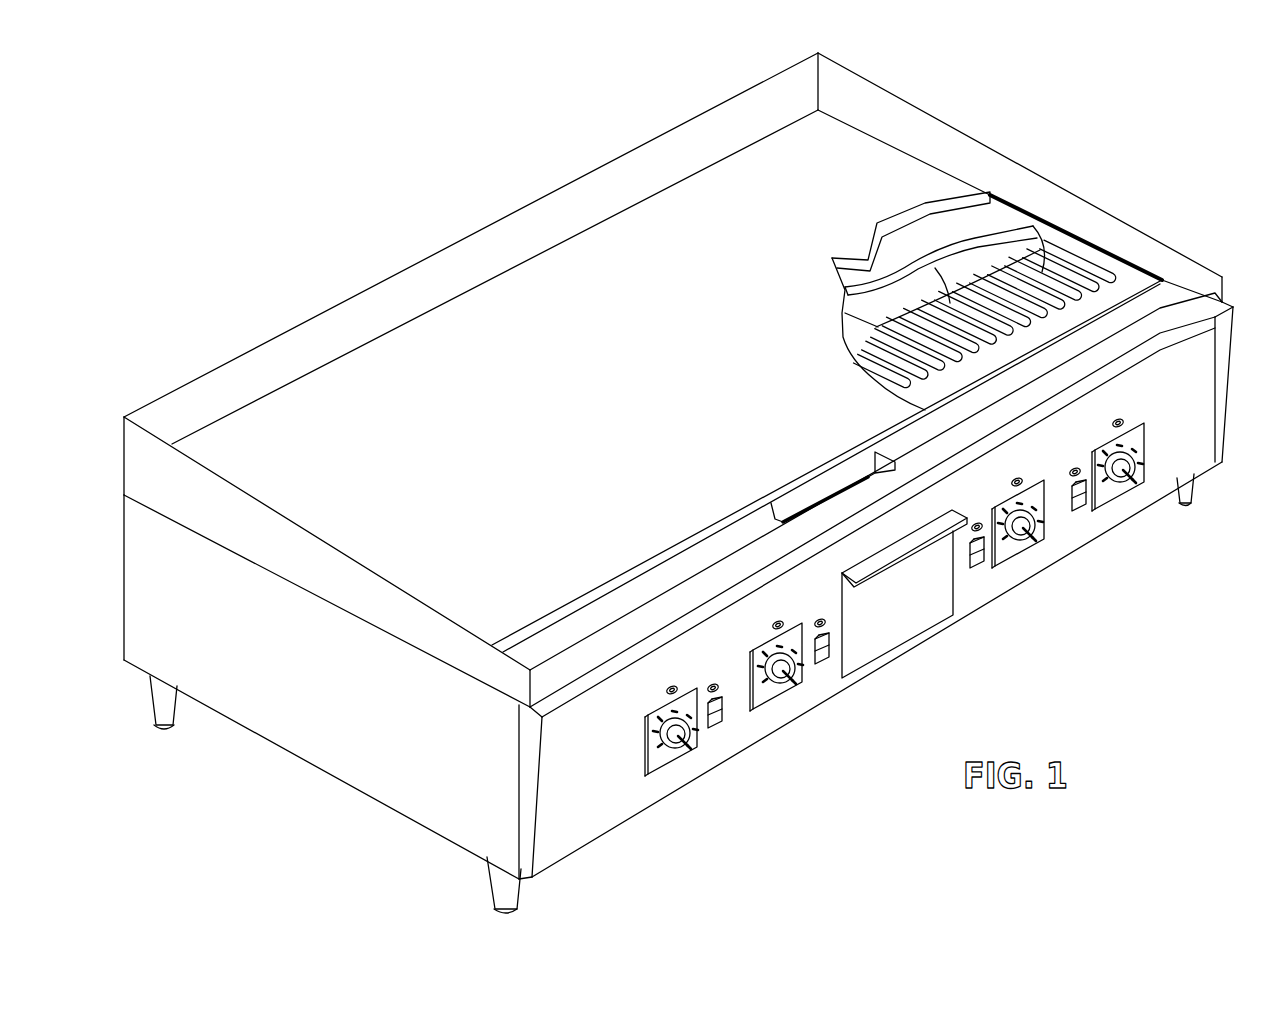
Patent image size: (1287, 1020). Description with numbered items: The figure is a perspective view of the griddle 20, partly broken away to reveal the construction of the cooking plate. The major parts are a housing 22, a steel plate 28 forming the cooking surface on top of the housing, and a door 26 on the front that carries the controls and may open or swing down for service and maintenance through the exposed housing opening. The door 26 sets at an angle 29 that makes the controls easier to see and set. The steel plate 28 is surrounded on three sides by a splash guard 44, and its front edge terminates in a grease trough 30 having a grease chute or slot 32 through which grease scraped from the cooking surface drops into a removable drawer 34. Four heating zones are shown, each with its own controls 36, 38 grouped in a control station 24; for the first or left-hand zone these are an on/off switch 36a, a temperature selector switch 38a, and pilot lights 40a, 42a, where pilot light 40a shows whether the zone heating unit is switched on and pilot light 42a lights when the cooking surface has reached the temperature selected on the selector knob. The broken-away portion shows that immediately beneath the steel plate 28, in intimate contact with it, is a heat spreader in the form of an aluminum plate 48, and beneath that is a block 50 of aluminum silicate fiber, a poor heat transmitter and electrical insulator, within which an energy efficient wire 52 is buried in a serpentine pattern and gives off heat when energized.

The griddle 20 is at (523, 176).
The housing 22 is at (128, 576).
The control station 24 is at (636, 758).
The door 26 is at (573, 828).
The steel plate 28 is at (932, 205).
The angle 29 is at (1190, 440).
The grease trough 30 is at (550, 632).
The grease chute or slot 32 is at (782, 510).
The removable drawer 34 is at (913, 617).
The controls 36 is at (822, 662).
The on/off switch 36a is at (717, 728).
The controls 38 is at (793, 678).
The temperature selector switch 38a is at (688, 745).
The pilot light 40a is at (714, 686).
The pilot light 42a is at (668, 689).
The splash guard 44 is at (267, 346).
The aluminum plate 48 is at (928, 250).
The block of aluminum silicate fiber 50 is at (980, 268).
The energy efficient wire 52 is at (1108, 270).